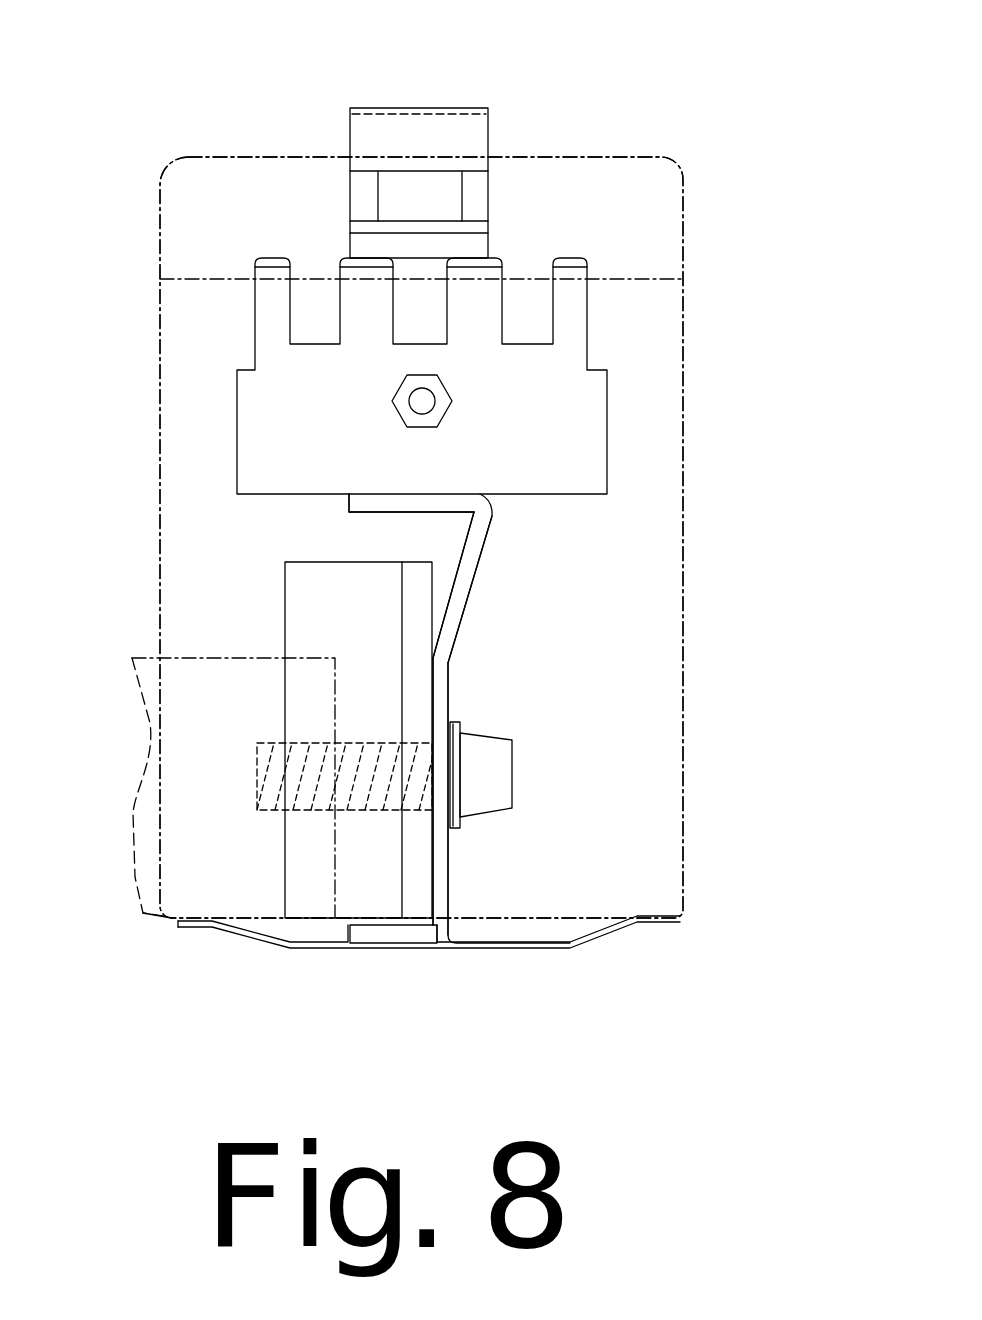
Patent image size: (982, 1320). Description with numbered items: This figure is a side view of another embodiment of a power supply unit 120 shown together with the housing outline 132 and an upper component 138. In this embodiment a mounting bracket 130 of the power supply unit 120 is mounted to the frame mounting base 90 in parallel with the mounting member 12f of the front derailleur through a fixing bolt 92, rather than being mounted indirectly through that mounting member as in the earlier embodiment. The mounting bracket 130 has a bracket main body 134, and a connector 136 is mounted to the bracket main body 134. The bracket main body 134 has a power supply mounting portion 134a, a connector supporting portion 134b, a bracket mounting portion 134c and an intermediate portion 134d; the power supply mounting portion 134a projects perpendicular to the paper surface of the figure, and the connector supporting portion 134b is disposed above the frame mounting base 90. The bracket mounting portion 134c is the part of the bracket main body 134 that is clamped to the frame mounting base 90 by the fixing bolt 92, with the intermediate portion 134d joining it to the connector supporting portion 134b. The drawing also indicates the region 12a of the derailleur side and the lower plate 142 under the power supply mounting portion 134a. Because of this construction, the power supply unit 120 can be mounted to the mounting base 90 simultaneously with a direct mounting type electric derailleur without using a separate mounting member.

The power supply unit 120 is at (652, 132).
The housing 132 is at (683, 548).
The terminal connector 138 is at (467, 108).
The connector 136 is at (607, 430).
The bracket main body 134 is at (462, 848).
The power supply mounting portion 134a is at (390, 935).
The connector supporting portion 134b is at (377, 503).
The bracket mounting portion 134c is at (442, 720).
The intermediate portion 134d is at (473, 555).
The mounting bracket 130 is at (478, 618).
The fixing bolt 92 is at (502, 752).
The frame mounting base 90 is at (303, 618).
The holder portion 12a is at (193, 655).
The mounting member 12f is at (173, 927).
The base plate 142 is at (543, 947).